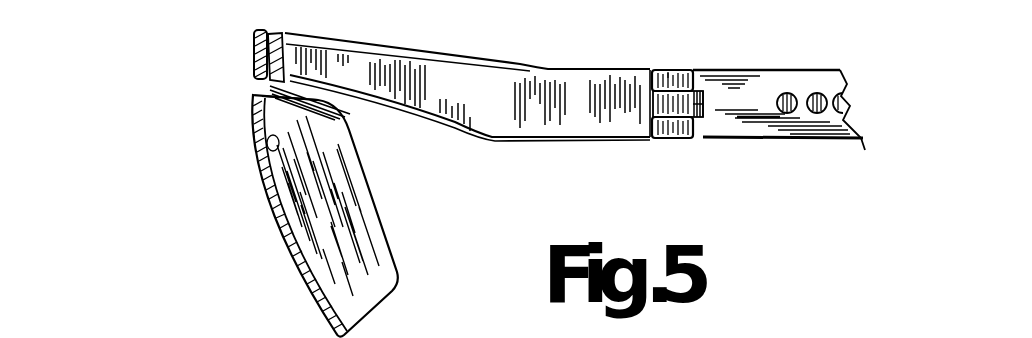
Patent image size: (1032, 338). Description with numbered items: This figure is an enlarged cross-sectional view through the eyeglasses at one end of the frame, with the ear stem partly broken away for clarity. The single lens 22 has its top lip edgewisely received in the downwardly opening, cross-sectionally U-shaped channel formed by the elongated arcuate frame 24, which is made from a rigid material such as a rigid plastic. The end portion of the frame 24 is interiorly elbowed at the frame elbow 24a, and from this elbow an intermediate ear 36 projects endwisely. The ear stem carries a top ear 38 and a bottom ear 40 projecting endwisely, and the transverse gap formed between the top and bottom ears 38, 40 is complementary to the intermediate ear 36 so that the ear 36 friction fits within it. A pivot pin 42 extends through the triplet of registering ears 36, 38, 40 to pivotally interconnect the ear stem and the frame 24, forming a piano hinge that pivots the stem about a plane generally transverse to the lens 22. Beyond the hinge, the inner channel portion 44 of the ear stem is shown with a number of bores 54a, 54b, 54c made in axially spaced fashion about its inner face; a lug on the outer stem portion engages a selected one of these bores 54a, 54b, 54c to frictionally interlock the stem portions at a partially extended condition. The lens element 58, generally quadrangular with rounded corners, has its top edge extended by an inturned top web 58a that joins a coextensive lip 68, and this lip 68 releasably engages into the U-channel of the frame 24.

The single lens 22 is at (262, 213).
The elongated arcuate frame 24 is at (253, 65).
The frame elbow 24a is at (535, 85).
The intermediate ear 36 is at (707, 100).
The top ear 38 is at (657, 69).
The bottom ear 40 is at (688, 142).
The pivot pin 42 is at (668, 70).
The inner channel portion 44 is at (765, 125).
The bore 54a is at (790, 95).
The bore 54b is at (818, 93).
The bore 54c is at (848, 100).
The lens element 58 is at (268, 146).
The inturned top web 58a is at (256, 93).
The lip 68 is at (258, 30).